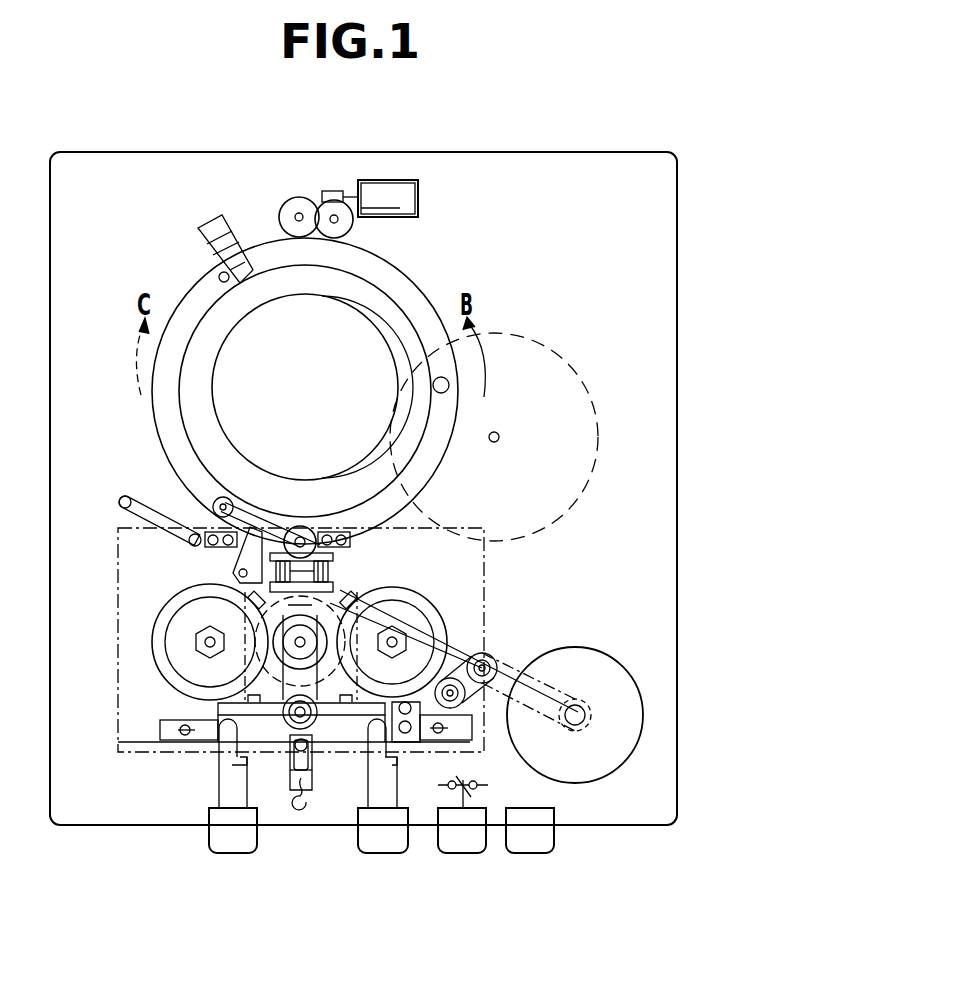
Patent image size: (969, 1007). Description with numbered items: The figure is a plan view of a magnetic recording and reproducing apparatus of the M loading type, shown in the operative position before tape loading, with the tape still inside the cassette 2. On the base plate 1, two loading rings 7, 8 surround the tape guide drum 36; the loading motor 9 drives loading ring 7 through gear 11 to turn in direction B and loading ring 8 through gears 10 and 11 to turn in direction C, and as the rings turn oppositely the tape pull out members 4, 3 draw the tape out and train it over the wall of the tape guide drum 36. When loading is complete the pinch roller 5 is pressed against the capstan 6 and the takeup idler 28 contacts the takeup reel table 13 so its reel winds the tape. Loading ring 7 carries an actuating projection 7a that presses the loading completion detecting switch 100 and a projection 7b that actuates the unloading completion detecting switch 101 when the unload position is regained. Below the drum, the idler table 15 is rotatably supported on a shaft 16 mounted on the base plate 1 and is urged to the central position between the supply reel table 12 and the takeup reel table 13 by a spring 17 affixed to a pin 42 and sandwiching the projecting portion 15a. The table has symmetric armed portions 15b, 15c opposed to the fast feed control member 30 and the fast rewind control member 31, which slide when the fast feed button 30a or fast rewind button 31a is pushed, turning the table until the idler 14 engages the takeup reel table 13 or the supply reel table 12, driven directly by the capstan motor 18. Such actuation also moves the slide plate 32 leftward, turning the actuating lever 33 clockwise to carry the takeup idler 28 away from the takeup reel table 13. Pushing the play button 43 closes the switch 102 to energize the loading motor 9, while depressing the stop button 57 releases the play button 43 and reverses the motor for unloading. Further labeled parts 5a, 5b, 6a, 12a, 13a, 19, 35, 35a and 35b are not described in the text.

The base plate 1 is at (659, 826).
The cassette 2 is at (126, 684).
The tape pull out member 3 is at (212, 551).
The tape pull out member 4 is at (350, 546).
The pinch roller 5 is at (312, 549).
The pinch roller arm 5a is at (256, 520).
The pivot pin 5b is at (223, 497).
The capstan 6 is at (500, 436).
The reel 6a is at (568, 356).
The loading ring 7 is at (375, 262).
The actuating projection 7a is at (444, 393).
The projection 7b is at (219, 277).
The loading ring 8 is at (402, 297).
The loading motor 9 is at (392, 190).
The gear 10 is at (299, 197).
The gear 11 is at (336, 205).
The supply reel table 12 is at (178, 620).
The reel shaft 12a is at (206, 647).
The takeup reel table 13 is at (405, 607).
The reel shaft 13a is at (393, 643).
The idler 14 is at (294, 662).
The idler table 15 is at (345, 708).
The projecting portion 15a is at (312, 748).
The armed portion 15b is at (218, 738).
The armed portion 15c is at (392, 760).
The shaft 16 is at (288, 765).
The spring 17 is at (310, 790).
The capstan motor 18 is at (587, 780).
The belt 19 is at (600, 716).
The takeup idler 28 is at (490, 661).
The fast feed control member 30 is at (221, 782).
The fast feed button 30a is at (212, 845).
The fast rewind control member 31 is at (395, 793).
The fast rewind button 31a is at (383, 853).
The slide plate 32 is at (160, 730).
The actuating lever 33 is at (465, 656).
The lever 35 is at (134, 516).
The pin 35a is at (186, 540).
The pivot pin 35b is at (122, 497).
The tape guide drum 36 is at (228, 378).
The pin 42 is at (300, 806).
The play button 43 is at (461, 853).
The stop button 57 is at (531, 853).
The loading completion detecting switch 100 is at (235, 242).
The unloading completion detecting switch 101 is at (208, 250).
The switch 102 is at (487, 768).